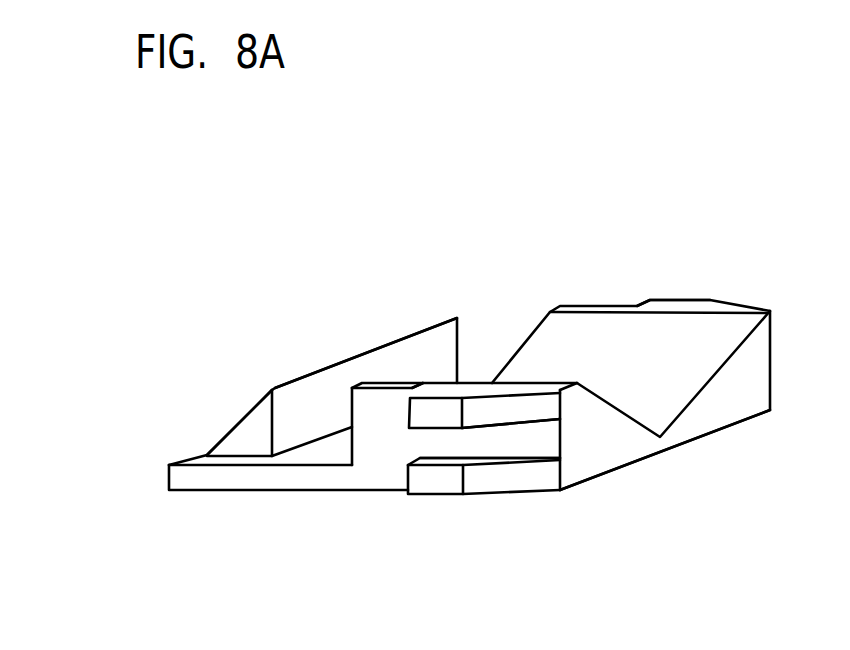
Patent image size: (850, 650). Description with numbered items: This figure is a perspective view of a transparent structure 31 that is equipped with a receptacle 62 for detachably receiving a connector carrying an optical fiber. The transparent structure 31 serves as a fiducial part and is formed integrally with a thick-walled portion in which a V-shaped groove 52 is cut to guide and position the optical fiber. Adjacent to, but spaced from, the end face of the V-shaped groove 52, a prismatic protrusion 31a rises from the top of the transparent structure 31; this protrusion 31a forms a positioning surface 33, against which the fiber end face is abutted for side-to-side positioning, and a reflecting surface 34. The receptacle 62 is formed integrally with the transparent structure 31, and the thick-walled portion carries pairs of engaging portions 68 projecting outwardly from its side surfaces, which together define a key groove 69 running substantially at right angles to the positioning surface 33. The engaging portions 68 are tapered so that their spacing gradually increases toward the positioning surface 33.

The transparent structure 31 is at (238, 483).
The prismatic protrusion 31a is at (295, 380).
The positioning surface 33 is at (420, 368).
The reflecting surface 34 is at (250, 400).
The V-shaped groove 52 is at (673, 368).
The receptacle 62 is at (475, 483).
The engaging portions 68 is at (425, 405).
The key groove 69 is at (667, 300).